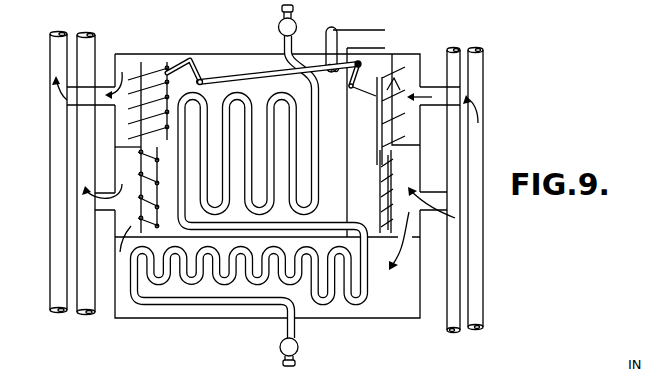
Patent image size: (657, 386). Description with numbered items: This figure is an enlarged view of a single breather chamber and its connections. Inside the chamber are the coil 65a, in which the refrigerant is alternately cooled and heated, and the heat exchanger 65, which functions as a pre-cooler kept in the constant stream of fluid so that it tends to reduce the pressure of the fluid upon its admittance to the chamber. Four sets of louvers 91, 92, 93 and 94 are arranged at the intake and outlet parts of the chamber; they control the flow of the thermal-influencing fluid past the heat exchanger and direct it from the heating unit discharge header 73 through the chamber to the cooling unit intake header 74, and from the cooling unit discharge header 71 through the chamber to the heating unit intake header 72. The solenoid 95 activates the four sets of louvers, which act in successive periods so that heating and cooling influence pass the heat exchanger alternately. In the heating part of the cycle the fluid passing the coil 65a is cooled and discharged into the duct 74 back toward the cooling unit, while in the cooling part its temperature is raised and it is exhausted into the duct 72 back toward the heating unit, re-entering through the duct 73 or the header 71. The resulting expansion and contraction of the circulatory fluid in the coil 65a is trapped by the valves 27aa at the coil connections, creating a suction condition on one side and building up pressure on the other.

The heat exchanger 65 is at (228, 288).
The coil 65a is at (243, 90).
The valve 27aa is at (279, 21).
The cooling unit discharge header 71 is at (449, 49).
The heating unit intake header 72 is at (93, 43).
The heating unit discharge header 73 is at (484, 49).
The cooling unit intake header 74 is at (54, 42).
The louver 91 is at (380, 193).
The louver 92 is at (377, 113).
The louver 93 is at (143, 195).
The louver 94 is at (143, 91).
The solenoid 95 is at (327, 42).